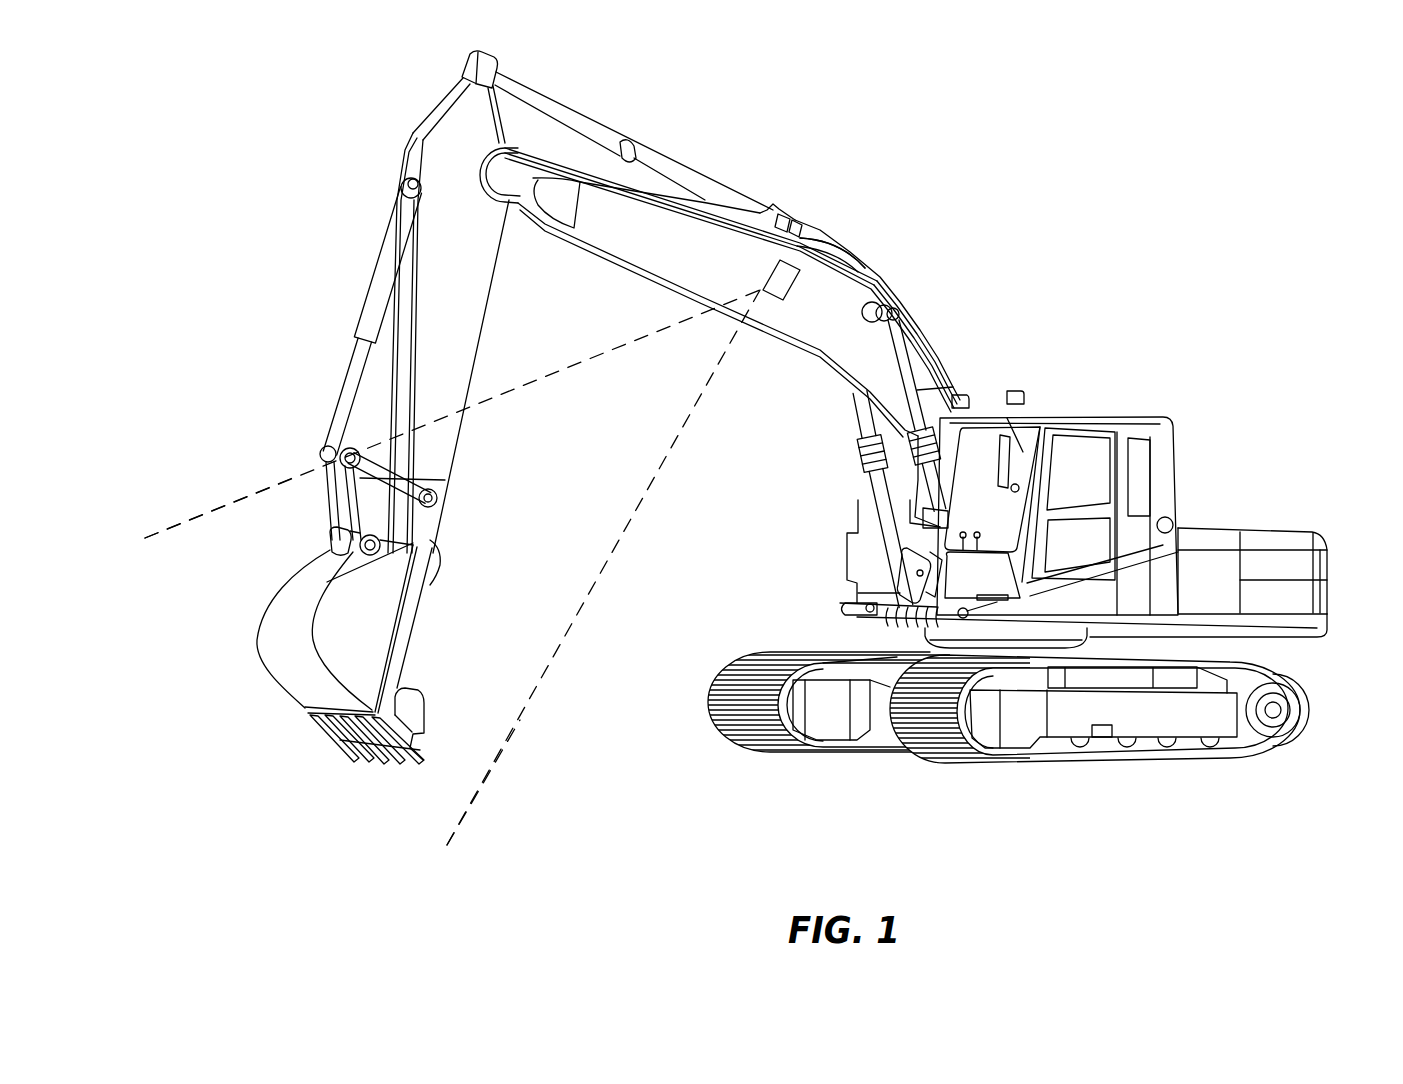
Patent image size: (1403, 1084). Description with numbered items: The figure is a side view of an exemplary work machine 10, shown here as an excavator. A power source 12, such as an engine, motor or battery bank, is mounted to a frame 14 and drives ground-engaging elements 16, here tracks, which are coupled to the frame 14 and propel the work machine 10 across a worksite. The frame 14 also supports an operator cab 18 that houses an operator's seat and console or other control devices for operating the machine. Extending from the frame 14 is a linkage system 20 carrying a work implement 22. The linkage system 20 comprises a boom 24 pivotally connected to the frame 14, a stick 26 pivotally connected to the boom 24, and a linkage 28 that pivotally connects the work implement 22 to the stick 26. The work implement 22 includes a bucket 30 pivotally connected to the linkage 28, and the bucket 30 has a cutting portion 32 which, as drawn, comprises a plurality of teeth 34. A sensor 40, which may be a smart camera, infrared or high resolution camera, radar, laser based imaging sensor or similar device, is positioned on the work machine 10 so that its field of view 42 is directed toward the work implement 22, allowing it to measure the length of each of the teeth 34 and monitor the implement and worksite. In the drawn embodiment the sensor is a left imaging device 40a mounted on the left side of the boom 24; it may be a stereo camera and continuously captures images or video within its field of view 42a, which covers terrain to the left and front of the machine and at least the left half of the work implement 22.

The work machine 10 is at (1068, 218).
The power source 12 is at (1277, 520).
The frame 14 is at (1287, 623).
The ground-engaging elements 16 is at (732, 717).
The operator cab 18 is at (1088, 457).
The linkage system 20 is at (527, 268).
The work implement 22 is at (349, 688).
The boom 24 is at (850, 293).
The stick 26 is at (437, 290).
The linkage 28 is at (330, 458).
The bucket 30 is at (283, 655).
The cutting portion 32 is at (360, 770).
The teeth 34 is at (425, 757).
The sensor 40 is at (780, 284).
The left imaging device 40a is at (783, 281).
The field of view 42 is at (520, 388).
The field of view of left imaging device 42a is at (202, 517).